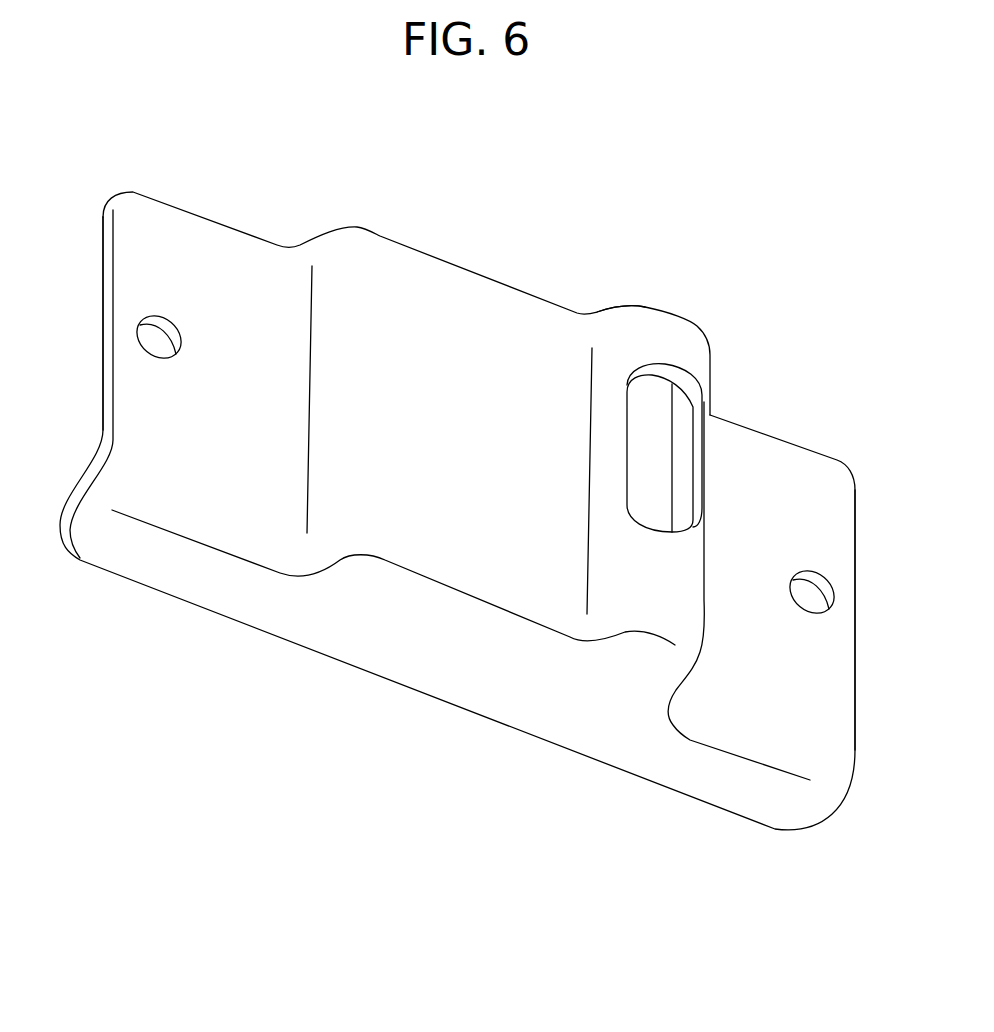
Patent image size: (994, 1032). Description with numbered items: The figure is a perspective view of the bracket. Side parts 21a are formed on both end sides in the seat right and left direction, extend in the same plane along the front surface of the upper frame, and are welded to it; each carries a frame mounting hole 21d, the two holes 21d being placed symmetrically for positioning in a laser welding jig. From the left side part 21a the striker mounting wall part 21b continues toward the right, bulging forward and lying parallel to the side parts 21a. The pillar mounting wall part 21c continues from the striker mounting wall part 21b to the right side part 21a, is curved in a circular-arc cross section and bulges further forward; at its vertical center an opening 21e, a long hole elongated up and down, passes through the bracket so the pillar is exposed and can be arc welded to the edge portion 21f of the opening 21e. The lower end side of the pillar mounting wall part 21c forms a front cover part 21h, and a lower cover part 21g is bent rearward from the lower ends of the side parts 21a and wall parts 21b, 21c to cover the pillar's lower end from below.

The side part 21a is at (190, 246).
The striker mounting wall part 21b is at (449, 312).
The pillar mounting wall part 21c is at (643, 337).
The frame mounting hole 21d is at (145, 342).
The opening 21e is at (730, 404).
The edge portion 21f is at (645, 378).
The lower cover part 21g is at (423, 643).
The front cover part 21h is at (632, 575).